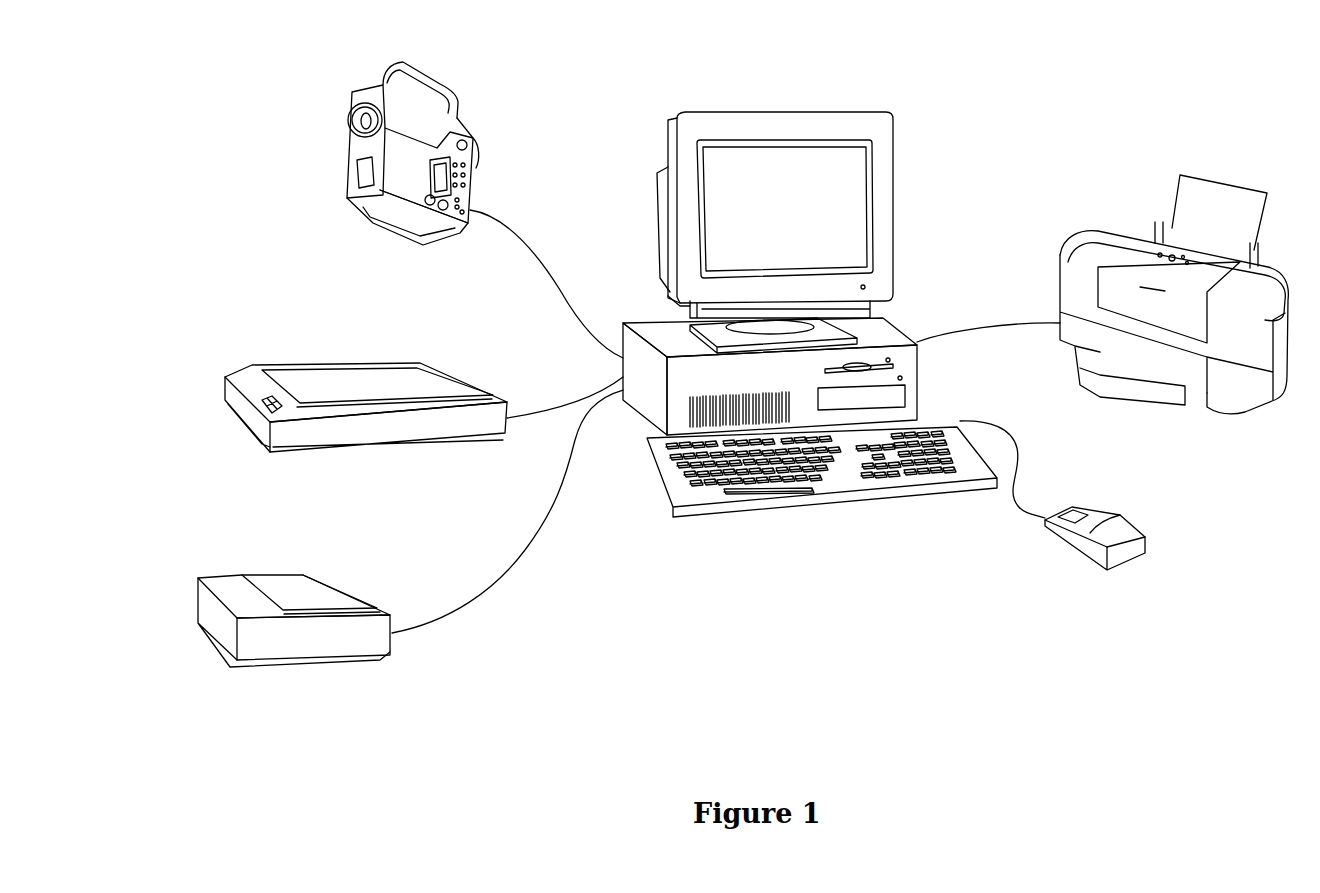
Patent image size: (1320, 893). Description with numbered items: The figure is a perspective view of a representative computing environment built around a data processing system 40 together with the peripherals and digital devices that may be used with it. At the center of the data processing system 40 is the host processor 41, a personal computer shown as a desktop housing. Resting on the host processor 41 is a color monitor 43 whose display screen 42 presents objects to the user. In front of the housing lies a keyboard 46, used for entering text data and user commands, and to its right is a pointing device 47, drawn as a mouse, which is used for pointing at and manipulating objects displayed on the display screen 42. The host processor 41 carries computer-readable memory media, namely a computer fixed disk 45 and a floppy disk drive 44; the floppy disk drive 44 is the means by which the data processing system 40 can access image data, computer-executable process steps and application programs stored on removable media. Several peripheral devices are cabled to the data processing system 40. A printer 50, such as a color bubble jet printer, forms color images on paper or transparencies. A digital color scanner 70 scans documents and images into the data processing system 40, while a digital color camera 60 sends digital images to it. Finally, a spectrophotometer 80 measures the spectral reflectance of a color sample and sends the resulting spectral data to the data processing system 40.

The data processing system 40 is at (929, 105).
The host processor 41 is at (635, 322).
The display screen 42 is at (853, 227).
The color monitor 43 is at (753, 112).
The floppy disk drive 44 is at (894, 368).
The computer fixed disk 45 is at (902, 400).
The keyboard 46 is at (727, 494).
The pointing device 47 is at (1127, 562).
The printer 50 is at (1075, 209).
The digital color camera 60 is at (475, 130).
The digital color scanner 70 is at (410, 453).
The spectrophotometer 80 is at (293, 667).